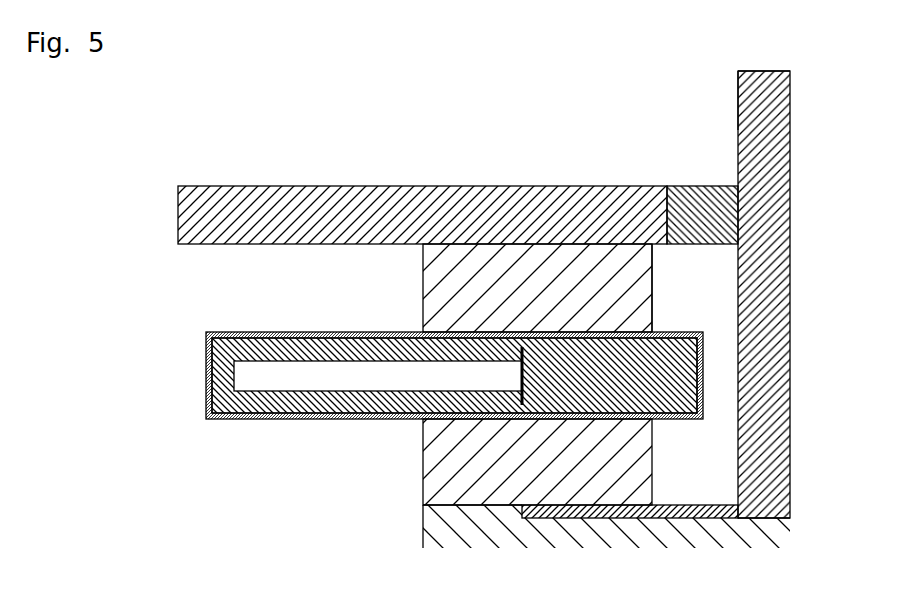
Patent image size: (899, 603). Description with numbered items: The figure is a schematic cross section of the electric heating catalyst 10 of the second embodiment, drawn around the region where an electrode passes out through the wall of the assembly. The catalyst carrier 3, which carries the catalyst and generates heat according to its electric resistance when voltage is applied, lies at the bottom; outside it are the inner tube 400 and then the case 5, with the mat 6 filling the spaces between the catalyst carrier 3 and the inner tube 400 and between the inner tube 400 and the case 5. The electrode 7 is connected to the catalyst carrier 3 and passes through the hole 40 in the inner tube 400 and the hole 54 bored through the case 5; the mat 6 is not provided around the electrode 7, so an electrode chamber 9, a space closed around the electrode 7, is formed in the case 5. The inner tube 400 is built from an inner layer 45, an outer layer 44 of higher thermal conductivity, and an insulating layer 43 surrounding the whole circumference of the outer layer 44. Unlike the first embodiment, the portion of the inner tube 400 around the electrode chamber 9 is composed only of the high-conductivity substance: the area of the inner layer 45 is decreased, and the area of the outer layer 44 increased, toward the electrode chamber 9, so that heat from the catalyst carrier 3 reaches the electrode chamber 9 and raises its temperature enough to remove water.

The catalyst carrier 3 is at (430, 519).
The case 5 is at (329, 187).
The mat 6 is at (437, 283).
The electrode 7 is at (738, 72).
The electrode chamber 9 is at (688, 282).
The electric heating catalyst 10 is at (458, 163).
The hole 40 is at (723, 375).
The hole 54 is at (700, 186).
The inner tube 400 is at (402, 379).
The insulating layer 43 is at (206, 422).
The outer layer 44 is at (213, 377).
The inner layer 45 is at (277, 378).